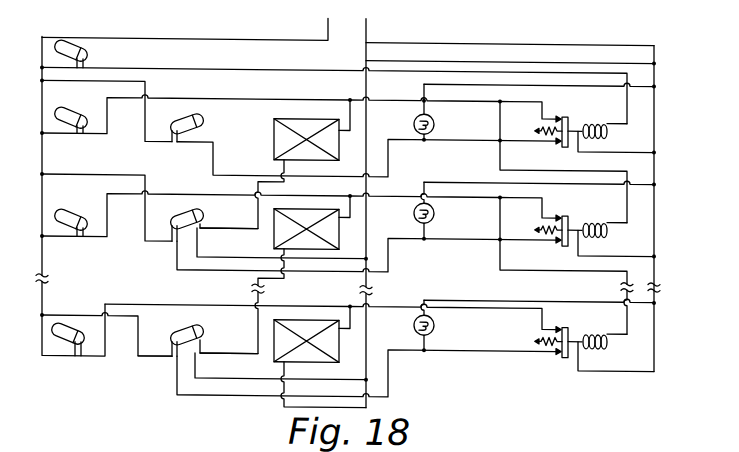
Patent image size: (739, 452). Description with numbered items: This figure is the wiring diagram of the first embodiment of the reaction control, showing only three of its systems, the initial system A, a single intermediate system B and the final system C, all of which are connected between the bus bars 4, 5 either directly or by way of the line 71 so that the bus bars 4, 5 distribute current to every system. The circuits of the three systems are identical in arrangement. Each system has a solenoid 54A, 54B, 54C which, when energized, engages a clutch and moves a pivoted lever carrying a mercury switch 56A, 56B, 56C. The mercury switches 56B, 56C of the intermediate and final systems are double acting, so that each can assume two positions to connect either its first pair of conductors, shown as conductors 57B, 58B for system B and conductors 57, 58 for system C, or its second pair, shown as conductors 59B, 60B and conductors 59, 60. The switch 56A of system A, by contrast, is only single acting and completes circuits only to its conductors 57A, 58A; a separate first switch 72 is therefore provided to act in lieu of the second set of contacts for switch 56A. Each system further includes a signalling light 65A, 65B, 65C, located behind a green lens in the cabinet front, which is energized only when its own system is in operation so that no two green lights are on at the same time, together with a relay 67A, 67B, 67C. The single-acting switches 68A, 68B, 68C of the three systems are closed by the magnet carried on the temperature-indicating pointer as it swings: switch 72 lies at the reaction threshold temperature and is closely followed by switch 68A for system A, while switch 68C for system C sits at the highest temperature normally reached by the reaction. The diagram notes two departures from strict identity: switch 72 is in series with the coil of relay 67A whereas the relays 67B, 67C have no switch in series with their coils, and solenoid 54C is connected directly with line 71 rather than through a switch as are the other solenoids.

The bus bar 4 is at (185, 27).
The bus bar 5 is at (434, 34).
The line 71 is at (366, 59).
The first switch 72 is at (87, 52).
The initial system A is at (42, 133).
The intermediate system B is at (42, 235).
The final system C is at (42, 314).
The single-acting switch 68A is at (77, 106).
The single-acting switch 68B is at (71, 216).
The single-acting switch 68C is at (73, 323).
The mercury switch 56A is at (205, 123).
The double-acting mercury switch 56B is at (205, 208).
The double-acting mercury switch 56C is at (203, 334).
The conductor 57A is at (166, 142).
The conductor 57B is at (161, 240).
The conductor 57 is at (152, 356).
The conductor 58A is at (213, 157).
The conductor 58B is at (176, 269).
The conductor 58 is at (174, 387).
The conductor 59B is at (224, 229).
The conductor 60B is at (224, 246).
The conductor 59 is at (225, 360).
The conductor 60 is at (246, 397).
The solenoid 54A is at (306, 124).
The solenoid 54B is at (312, 216).
The solenoid 54C is at (291, 323).
The light 65A is at (434, 121).
The light 65B is at (434, 209).
The light 65C is at (434, 321).
The relay 67A is at (577, 122).
The relay 67B is at (577, 222).
The relay 67C is at (572, 328).